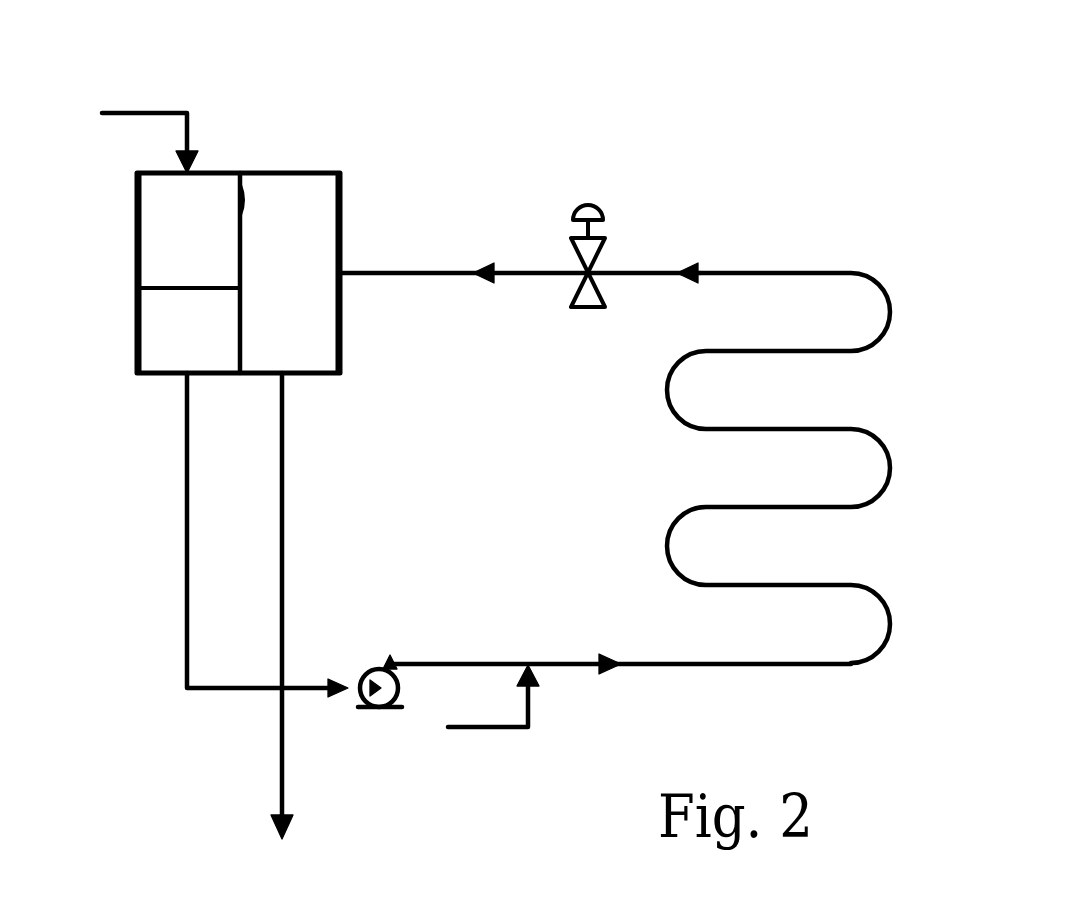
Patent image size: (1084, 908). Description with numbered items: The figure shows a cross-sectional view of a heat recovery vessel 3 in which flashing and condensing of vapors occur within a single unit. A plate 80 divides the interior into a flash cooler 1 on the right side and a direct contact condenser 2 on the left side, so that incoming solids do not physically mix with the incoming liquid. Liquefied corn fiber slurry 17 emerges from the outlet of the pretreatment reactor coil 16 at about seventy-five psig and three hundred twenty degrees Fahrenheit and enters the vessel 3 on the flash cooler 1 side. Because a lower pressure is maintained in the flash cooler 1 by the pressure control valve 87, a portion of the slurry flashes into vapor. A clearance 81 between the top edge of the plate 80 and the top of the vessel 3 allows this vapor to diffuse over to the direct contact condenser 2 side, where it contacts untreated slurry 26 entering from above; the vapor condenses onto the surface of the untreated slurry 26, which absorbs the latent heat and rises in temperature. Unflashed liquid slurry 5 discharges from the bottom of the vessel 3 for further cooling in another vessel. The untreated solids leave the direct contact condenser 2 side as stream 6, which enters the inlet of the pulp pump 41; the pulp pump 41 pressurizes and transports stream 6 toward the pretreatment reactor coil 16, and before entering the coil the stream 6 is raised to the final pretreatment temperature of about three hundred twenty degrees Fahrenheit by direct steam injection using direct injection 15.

The flash cooler 1 is at (292, 318).
The direct contact condenser 2 is at (182, 317).
The vessel 3 is at (221, 401).
The unflashed liquid slurry 5 is at (280, 747).
The stream 6 is at (186, 622).
The direct injection 15 is at (490, 727).
The pretreatment reactor coil 16 is at (890, 312).
The liquefied corn fiber slurry 17 is at (453, 267).
The untreated slurry 26 is at (138, 110).
The pulp pump 41 is at (360, 708).
The plate 80 is at (170, 287).
The clearance 81 is at (252, 198).
The pressure control valve 87 is at (588, 203).